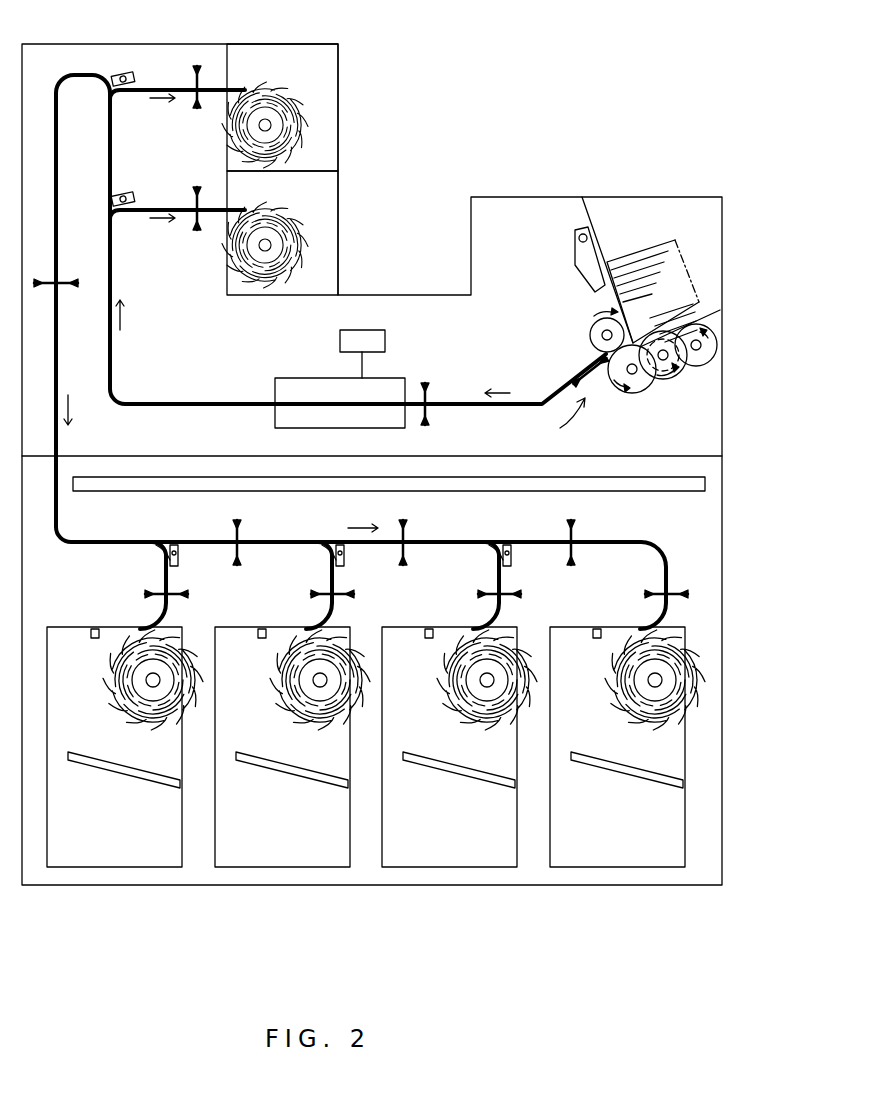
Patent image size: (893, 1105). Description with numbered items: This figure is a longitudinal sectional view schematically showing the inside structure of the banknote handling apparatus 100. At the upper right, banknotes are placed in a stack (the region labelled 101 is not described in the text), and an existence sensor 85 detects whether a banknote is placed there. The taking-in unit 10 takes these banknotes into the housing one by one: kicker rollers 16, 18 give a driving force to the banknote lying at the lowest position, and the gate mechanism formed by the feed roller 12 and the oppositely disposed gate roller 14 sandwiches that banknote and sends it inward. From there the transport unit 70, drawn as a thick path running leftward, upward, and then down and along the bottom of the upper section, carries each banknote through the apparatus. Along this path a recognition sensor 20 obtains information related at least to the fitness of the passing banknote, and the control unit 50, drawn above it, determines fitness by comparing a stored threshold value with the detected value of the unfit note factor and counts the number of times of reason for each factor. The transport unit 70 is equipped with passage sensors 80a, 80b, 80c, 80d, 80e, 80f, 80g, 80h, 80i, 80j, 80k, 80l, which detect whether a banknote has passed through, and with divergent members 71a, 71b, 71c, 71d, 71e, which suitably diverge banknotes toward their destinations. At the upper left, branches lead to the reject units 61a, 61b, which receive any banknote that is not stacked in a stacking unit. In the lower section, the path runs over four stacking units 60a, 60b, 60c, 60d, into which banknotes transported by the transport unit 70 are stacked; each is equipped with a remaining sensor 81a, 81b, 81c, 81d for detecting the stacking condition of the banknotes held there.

The banknote handling apparatus 100 is at (658, 108).
The paper feed cassette 101 is at (660, 233).
The existence sensor 85 is at (640, 325).
The gate roller 14 is at (600, 322).
The feed roller 12 is at (645, 392).
The kicker roller 16 is at (668, 380).
The kicker roller 18 is at (702, 366).
The taking-in unit 10 is at (564, 422).
The transport unit 70 is at (60, 330).
The passage sensor 80a is at (578, 368).
The passage sensor 80b is at (432, 412).
The passage sensor 80c is at (193, 226).
The passage sensor 80d is at (193, 100).
The passage sensor 80e is at (72, 280).
The passage sensor 80f is at (158, 592).
The passage sensor 80g is at (235, 530).
The passage sensor 80h is at (323, 592).
The passage sensor 80i is at (408, 530).
The passage sensor 80j is at (490, 592).
The passage sensor 80k is at (576, 530).
The passage sensor 80l is at (660, 592).
The recognition sensor 20 is at (300, 378).
The control unit 50 is at (365, 330).
The reject unit 61a is at (323, 188).
The reject unit 61b is at (317, 65).
The divergent member 71a is at (122, 195).
The divergent member 71b is at (118, 72).
The divergent member 71c is at (164, 545).
The divergent member 71d is at (332, 545).
The divergent member 71e is at (500, 545).
The stacking unit 60a is at (118, 855).
The stacking unit 60b is at (286, 855).
The stacking unit 60c is at (453, 855).
The stacking unit 60d is at (620, 855).
The remaining sensor 81a is at (90, 640).
The remaining sensor 81b is at (257, 640).
The remaining sensor 81c is at (424, 640).
The remaining sensor 81d is at (592, 640).